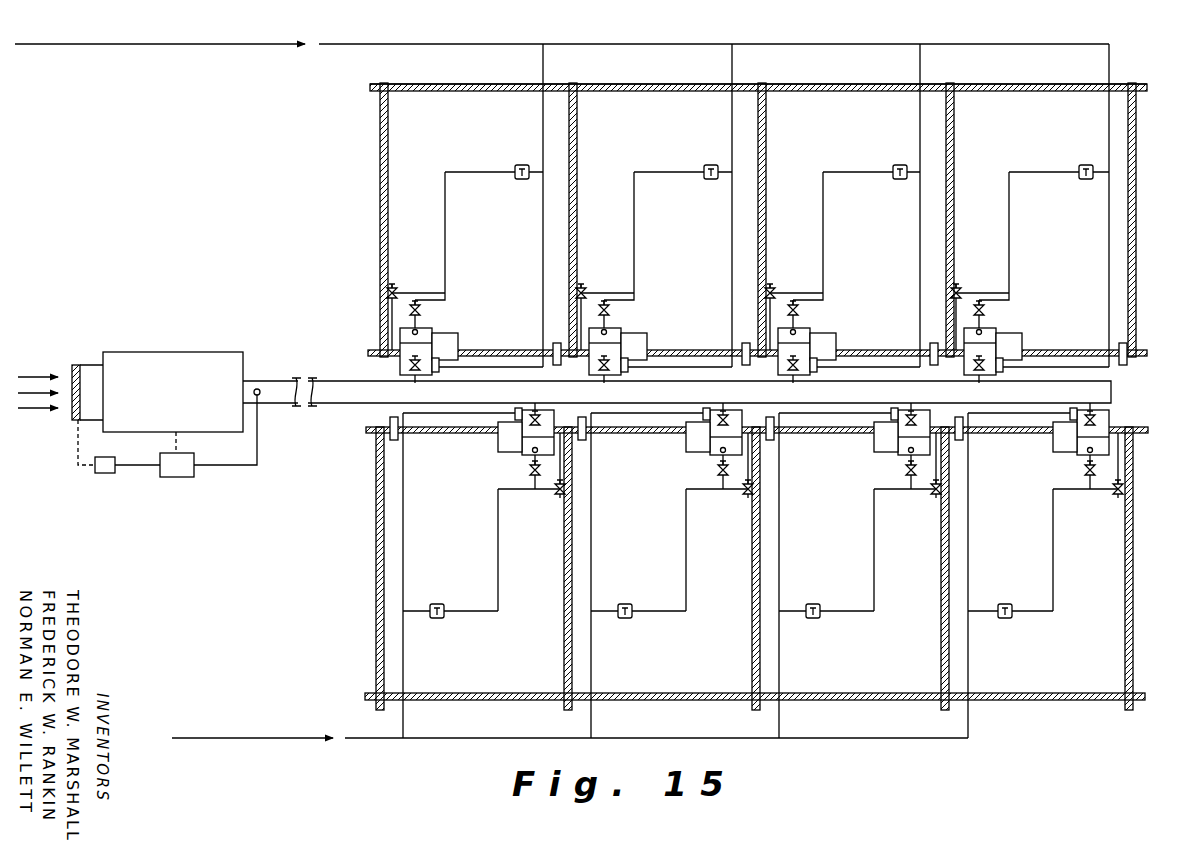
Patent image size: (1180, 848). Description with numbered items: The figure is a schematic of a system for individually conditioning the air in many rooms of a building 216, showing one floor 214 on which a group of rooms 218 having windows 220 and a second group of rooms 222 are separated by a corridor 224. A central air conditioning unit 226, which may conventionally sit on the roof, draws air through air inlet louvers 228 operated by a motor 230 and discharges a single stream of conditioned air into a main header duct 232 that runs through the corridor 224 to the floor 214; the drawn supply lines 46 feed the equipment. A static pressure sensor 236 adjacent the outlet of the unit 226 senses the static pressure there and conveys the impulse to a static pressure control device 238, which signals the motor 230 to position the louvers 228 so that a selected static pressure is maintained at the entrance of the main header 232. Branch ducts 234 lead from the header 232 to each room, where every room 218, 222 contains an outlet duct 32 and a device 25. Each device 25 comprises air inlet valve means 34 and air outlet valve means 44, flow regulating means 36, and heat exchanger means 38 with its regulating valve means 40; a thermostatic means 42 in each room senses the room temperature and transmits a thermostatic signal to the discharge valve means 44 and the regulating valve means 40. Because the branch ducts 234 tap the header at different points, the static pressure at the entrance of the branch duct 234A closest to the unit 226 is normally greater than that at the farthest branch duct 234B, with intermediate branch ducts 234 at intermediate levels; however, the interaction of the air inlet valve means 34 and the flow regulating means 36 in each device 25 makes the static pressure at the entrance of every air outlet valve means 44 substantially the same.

The compressed air supply line 46 is at (428, 44).
The building 216 is at (408, 82).
The windows 220 is at (667, 82).
The rooms 218 is at (500, 127).
The floor 214 is at (392, 150).
The thermostatic means 42 is at (522, 165).
The regulating valve means 40 is at (395, 290).
The air outlet valve means 44 is at (421, 309).
The device 25 is at (743, 391).
The heat exchanger means 38 is at (441, 346).
The outlet duct 32 is at (556, 343).
The air inlet valve means 34 is at (400, 370).
The flow regulating means 36 is at (436, 376).
The branch ducts 234 is at (604, 383).
The branch duct 234A is at (415, 383).
The branch duct 234B is at (1090, 405).
The main header duct 232 is at (342, 382).
The corridor 224 is at (380, 413).
The central air conditioning unit 226 is at (192, 350).
The air inlet louvers 228 is at (74, 366).
The motor 230 is at (105, 474).
The static pressure sensor 236 is at (257, 386).
The static pressure control device 238 is at (183, 478).
The rooms 222 is at (537, 680).